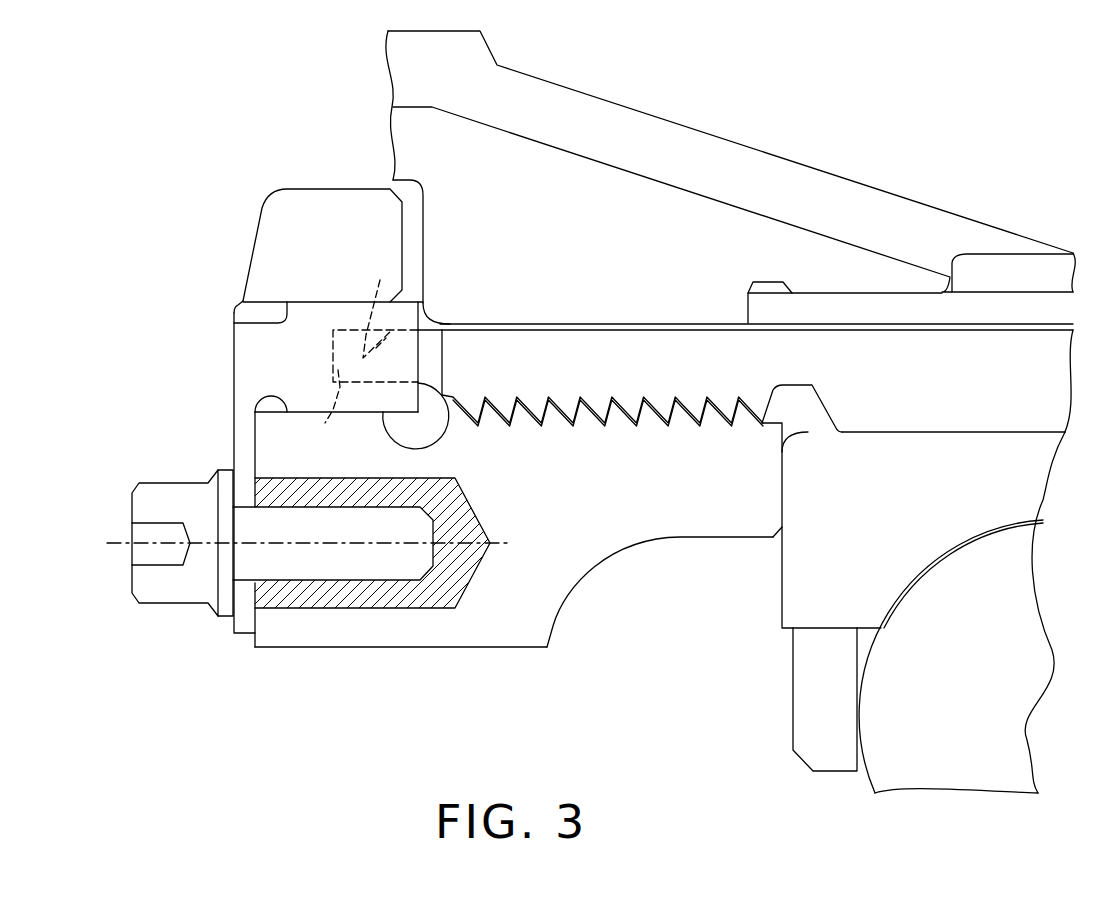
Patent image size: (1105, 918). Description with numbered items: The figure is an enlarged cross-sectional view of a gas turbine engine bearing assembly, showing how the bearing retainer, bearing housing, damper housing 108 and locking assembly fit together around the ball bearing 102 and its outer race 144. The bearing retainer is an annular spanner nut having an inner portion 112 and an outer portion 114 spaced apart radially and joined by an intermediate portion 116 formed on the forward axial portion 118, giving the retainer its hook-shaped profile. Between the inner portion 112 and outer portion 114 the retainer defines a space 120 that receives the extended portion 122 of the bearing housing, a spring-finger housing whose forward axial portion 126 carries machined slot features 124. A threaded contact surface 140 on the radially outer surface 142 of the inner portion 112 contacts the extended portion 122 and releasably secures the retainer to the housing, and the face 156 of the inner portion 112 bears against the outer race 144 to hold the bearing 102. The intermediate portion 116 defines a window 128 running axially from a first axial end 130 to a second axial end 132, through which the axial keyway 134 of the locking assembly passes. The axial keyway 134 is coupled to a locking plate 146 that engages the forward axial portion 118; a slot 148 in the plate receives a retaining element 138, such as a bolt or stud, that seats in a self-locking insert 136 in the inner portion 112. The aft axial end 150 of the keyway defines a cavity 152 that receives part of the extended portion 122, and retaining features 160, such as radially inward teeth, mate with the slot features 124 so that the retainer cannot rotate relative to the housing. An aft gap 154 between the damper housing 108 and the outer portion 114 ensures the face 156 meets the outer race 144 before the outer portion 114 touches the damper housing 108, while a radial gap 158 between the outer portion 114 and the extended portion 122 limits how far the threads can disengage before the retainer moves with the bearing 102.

The ball bearing 102 is at (956, 671).
The damper housing 108 is at (607, 224).
The inner portion 112 is at (666, 496).
The outer portion 114 is at (344, 252).
The intermediate portion 116 is at (234, 327).
The forward axial portion 118 is at (305, 647).
The space 120 is at (555, 330).
The extended portion 122 is at (629, 372).
The machined slot features 124 is at (333, 333).
The forward axial portion 126 is at (375, 382).
The window 128 is at (238, 303).
The first axial end 130 is at (262, 412).
The second axial end 132 is at (440, 443).
The axial keyway 134 is at (289, 386).
The self-locking insert 136 is at (457, 577).
The retaining element 138 is at (132, 510).
The threaded contact surface 140 is at (640, 412).
The radially outer surface 142 is at (683, 400).
The outer race 144 is at (884, 529).
The locking plate 146 is at (234, 430).
The slot 148 is at (243, 578).
The aft axial end 150 is at (425, 298).
The cavity 152 is at (334, 412).
The aft gap 154 is at (412, 223).
The face 156 is at (782, 518).
The radial gap 158 is at (685, 323).
The retaining feature 160 is at (380, 280).